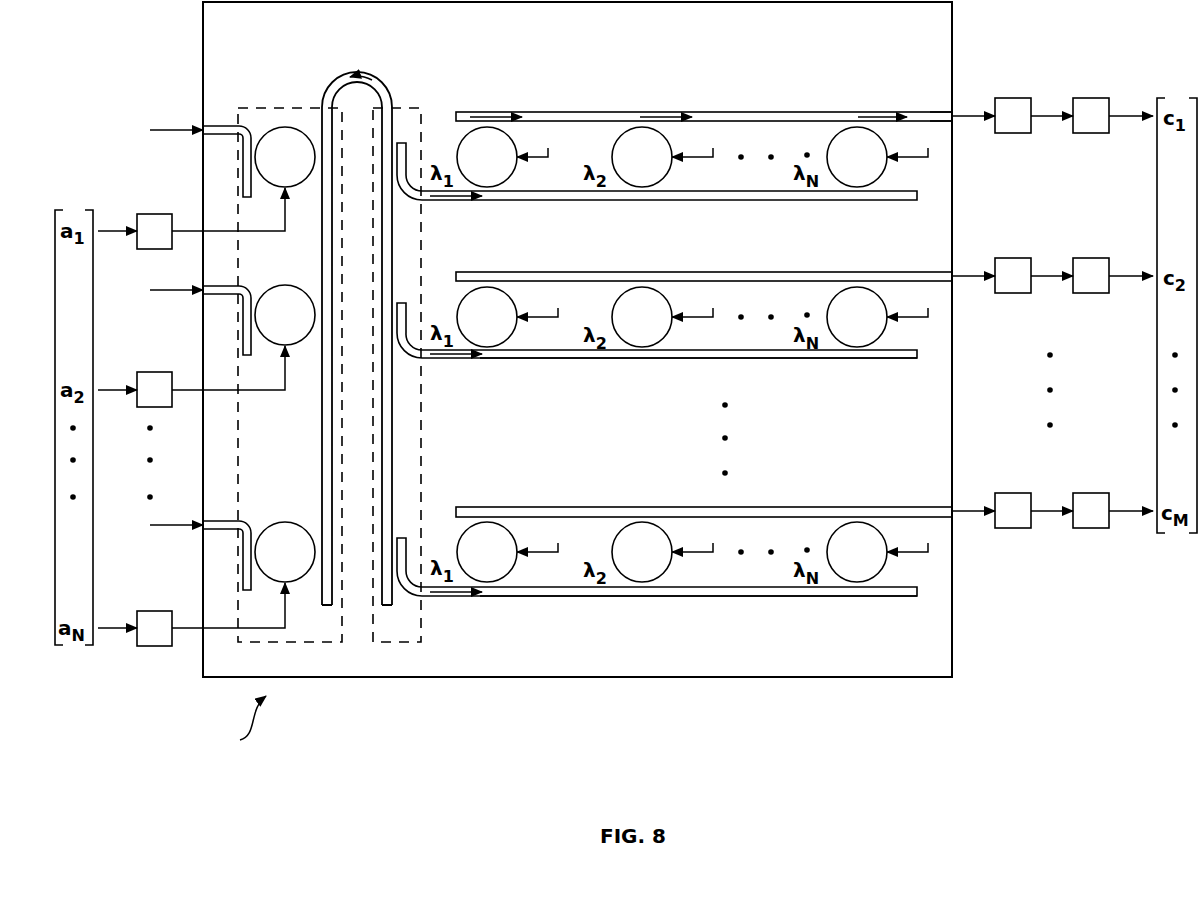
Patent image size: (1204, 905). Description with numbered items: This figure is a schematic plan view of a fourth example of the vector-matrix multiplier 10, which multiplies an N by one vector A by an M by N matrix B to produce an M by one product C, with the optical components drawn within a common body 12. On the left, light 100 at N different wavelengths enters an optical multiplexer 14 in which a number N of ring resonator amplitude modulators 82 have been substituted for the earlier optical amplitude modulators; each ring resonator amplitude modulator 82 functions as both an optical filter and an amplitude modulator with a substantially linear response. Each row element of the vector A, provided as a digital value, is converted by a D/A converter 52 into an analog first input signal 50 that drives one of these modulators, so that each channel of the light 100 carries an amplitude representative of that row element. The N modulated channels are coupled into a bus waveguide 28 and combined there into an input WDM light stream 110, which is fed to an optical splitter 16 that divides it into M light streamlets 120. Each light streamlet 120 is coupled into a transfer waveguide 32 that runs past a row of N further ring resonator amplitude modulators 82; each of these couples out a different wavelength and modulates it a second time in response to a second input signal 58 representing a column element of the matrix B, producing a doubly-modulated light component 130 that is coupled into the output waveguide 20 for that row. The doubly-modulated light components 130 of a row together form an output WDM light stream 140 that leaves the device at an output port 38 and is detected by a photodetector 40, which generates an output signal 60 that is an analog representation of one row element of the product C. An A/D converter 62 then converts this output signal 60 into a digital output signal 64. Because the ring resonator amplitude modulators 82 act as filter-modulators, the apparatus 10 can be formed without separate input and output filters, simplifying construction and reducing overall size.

The vector-matrix multiplier 10 is at (245, 733).
The optical device / substrate 12 is at (264, 60).
The optical multiplexer 14 is at (318, 643).
The optical splitter 16 is at (403, 643).
The output waveguide 20 is at (575, 112).
The bus waveguide 28 is at (320, 431).
The transfer waveguide 32 is at (508, 359).
The output port 38 is at (945, 112).
The photodetector 40 is at (1027, 126).
The first input signal 50 is at (190, 228).
The D/A converter 52 is at (168, 242).
The second input signal 58 is at (545, 161).
The output signal 60 is at (1056, 121).
The A/D converter 62 is at (1105, 126).
The digital output signal 64 is at (1132, 121).
The ring resonator amplitude modulator 82 is at (298, 167).
The light 100 is at (171, 126).
The input WDM light stream 110 is at (335, 85).
The light streamlet 120 is at (452, 201).
The doubly-modulated light component 130 is at (516, 112).
The output WDM light stream 140 is at (968, 121).